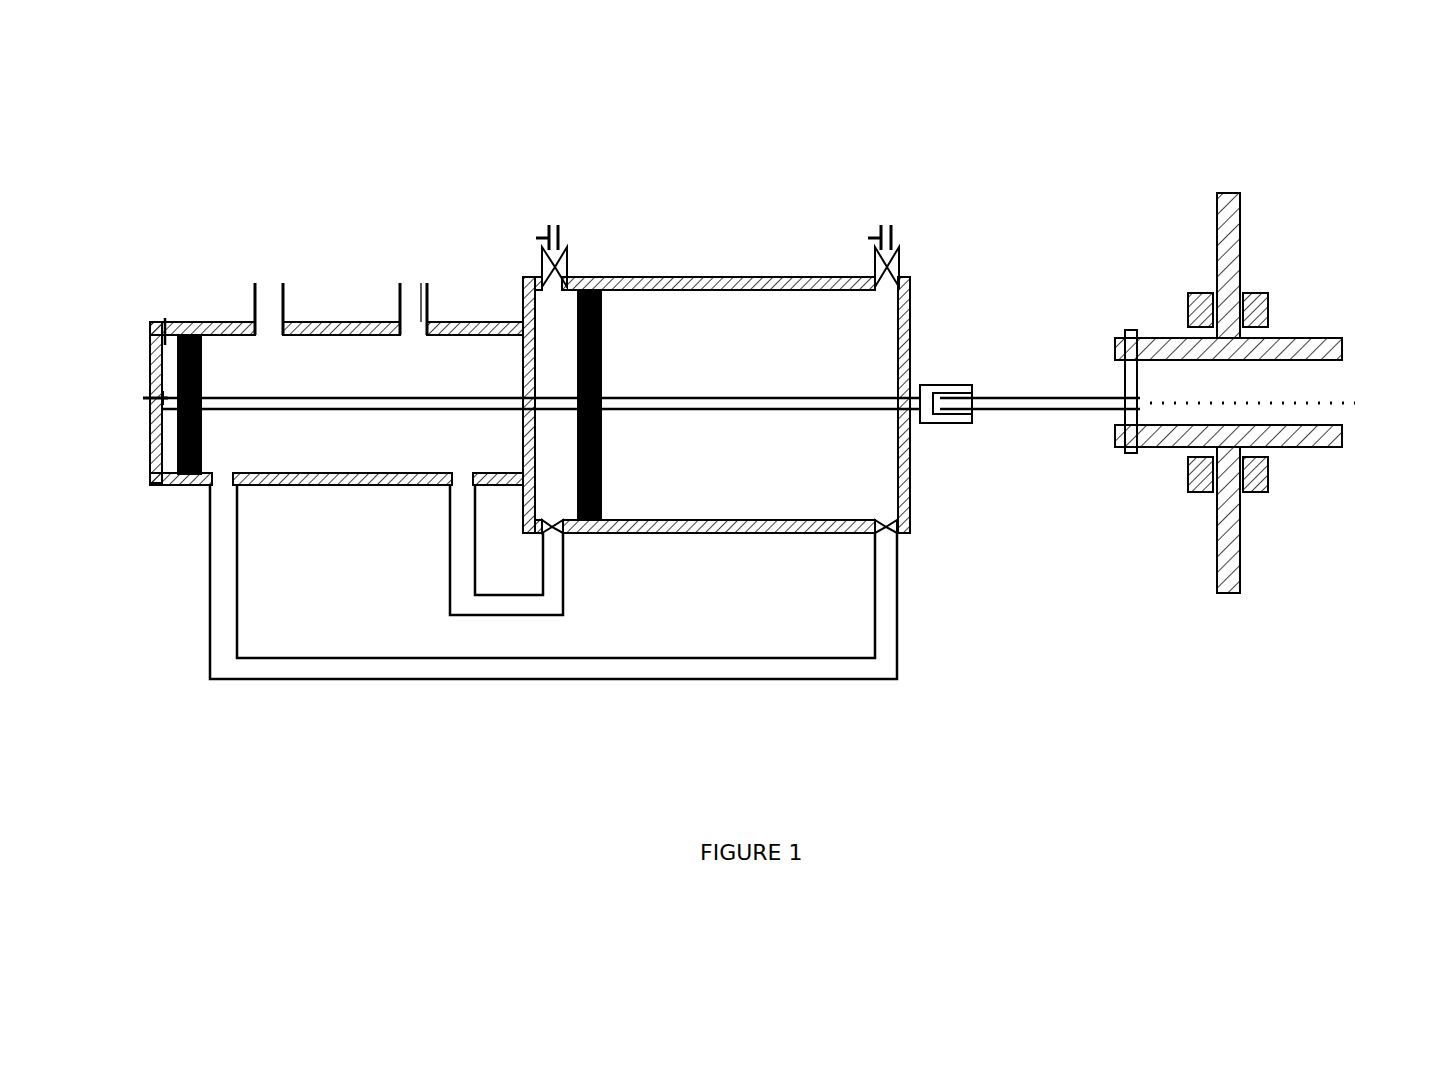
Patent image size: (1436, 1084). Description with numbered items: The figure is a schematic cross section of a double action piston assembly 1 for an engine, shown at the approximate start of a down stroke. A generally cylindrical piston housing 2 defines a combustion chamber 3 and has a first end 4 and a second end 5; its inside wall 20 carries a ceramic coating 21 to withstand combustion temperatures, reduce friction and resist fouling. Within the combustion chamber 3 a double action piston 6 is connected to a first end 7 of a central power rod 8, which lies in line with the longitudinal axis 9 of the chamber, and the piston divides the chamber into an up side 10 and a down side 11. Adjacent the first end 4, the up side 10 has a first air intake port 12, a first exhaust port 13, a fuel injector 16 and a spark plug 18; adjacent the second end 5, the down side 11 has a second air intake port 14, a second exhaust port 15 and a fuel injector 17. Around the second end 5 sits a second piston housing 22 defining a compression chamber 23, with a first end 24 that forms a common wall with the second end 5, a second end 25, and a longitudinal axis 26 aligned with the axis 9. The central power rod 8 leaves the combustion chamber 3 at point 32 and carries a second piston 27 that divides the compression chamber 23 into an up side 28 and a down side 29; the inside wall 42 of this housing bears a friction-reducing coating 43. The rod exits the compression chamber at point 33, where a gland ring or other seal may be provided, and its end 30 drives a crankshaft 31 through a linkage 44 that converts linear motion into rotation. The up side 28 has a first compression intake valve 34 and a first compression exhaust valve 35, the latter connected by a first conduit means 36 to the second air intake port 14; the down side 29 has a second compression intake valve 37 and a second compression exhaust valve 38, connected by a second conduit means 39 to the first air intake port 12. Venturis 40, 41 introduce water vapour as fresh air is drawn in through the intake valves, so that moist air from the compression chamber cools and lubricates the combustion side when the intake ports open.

The double action piston assembly 1 is at (980, 215).
The piston housing 2 is at (345, 320).
The combustion chamber 3 is at (337, 368).
The first end 4 is at (158, 340).
The second end 5 is at (523, 437).
The double action piston 6 is at (192, 333).
The first end of central power rod 7 is at (212, 400).
The central power rod 8 is at (421, 397).
The longitudinal axis of combustion chamber 9 is at (140, 398).
The up side 10 is at (172, 435).
The down side 11 is at (323, 435).
The first air intake port 12 is at (229, 492).
The first exhaust port 13 is at (267, 283).
The second air intake port 14 is at (448, 490).
The second exhaust port 15 is at (421, 302).
The fuel injector 16 is at (166, 332).
The fuel injector 17 is at (519, 328).
The spark plug 18 is at (150, 402).
The inside wall 20 is at (365, 472).
The ceramic coating 21 is at (308, 338).
The second piston housing 22 is at (686, 276).
The compression chamber 23 is at (688, 368).
The first end of second piston housing 24 is at (538, 456).
The second end of second piston housing 25 is at (900, 320).
The longitudinal axis of compression chamber 26 is at (1362, 400).
The second piston 27 is at (600, 340).
The up side of compression chamber 28 is at (555, 493).
The down side of compression chamber 29 is at (762, 475).
The end of central power rod 30 is at (957, 385).
The crankshaft 31 is at (1243, 222).
The point where power rod enters combustion chamber 32 is at (521, 397).
The point where power rod exits compression chamber 33 is at (897, 392).
The first compression intake valve 34 is at (563, 258).
The first compression exhaust valve 35 is at (560, 535).
The first conduit means 36 is at (537, 605).
The second compression intake valve 37 is at (896, 287).
The second compression exhaust valve 38 is at (895, 530).
The second conduit means 39 is at (382, 660).
The venturi 40 is at (545, 232).
The venturi 41 is at (877, 232).
The inside wall of second piston housing 42 is at (707, 512).
The coating 43 is at (782, 298).
The linkage 44 is at (1050, 422).